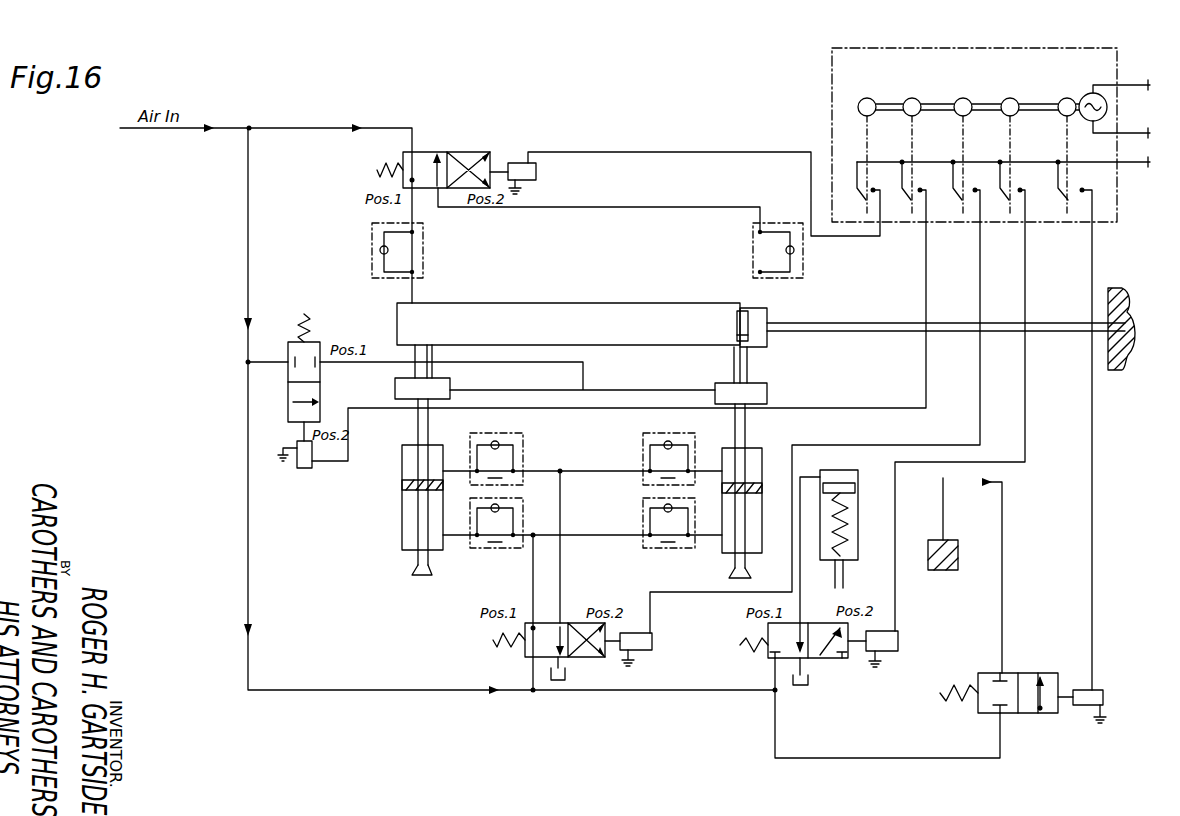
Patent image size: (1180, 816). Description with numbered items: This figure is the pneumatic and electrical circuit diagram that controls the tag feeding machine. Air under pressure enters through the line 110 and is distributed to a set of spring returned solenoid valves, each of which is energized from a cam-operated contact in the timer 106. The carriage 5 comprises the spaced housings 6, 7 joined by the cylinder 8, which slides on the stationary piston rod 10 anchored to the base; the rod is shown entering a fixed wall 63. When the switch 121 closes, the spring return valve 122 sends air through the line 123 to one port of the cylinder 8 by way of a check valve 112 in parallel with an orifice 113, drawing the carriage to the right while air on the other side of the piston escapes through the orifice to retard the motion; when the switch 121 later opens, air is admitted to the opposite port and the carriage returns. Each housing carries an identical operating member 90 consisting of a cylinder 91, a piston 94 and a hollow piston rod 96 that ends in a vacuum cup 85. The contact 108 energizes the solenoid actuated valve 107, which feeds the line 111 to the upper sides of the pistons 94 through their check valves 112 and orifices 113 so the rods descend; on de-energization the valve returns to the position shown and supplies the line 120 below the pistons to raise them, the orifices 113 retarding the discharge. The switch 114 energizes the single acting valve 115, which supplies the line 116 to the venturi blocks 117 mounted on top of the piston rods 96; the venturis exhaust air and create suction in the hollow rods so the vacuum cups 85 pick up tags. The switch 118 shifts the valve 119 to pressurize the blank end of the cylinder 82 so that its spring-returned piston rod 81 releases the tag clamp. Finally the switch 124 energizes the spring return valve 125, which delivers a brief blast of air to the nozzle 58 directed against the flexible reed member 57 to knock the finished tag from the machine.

The line 110 is at (252, 126).
The spring return valve 122 is at (450, 152).
The line 123 is at (620, 207).
The check valve 112 is at (380, 250).
The orifice 113 is at (422, 256).
The cylinder 8 is at (520, 303).
The carriage 5 is at (598, 287).
The housing 7 is at (434, 352).
The housing 6 is at (749, 358).
The piston rod 10 is at (892, 306).
The wall 63 is at (1116, 364).
The venturi block 117 is at (395, 389).
The line 116 is at (585, 390).
The solenoid valve 115 is at (288, 412).
The operating member 90 is at (403, 447).
The piston 94 is at (405, 486).
The cylinder 91 is at (402, 504).
The piston rod 96 is at (418, 527).
The vacuum cup 85 is at (412, 580).
The line 111 is at (562, 474).
The line 120 is at (535, 535).
The solenoid actuated valve 107 is at (576, 660).
The valve 119 is at (822, 660).
The cylinder 82 is at (858, 482).
The piston rod 81 is at (843, 576).
The flexible reed member 57 is at (943, 512).
The nozzle 58 is at (984, 484).
The spring return valve 125 is at (1020, 673).
The timer 106 is at (832, 72).
The switch 121 is at (704, 194).
The switch 114 is at (619, 311).
The contact 108 is at (815, 397).
The switch 118 is at (960, 396).
The switch 124 is at (1062, 425).